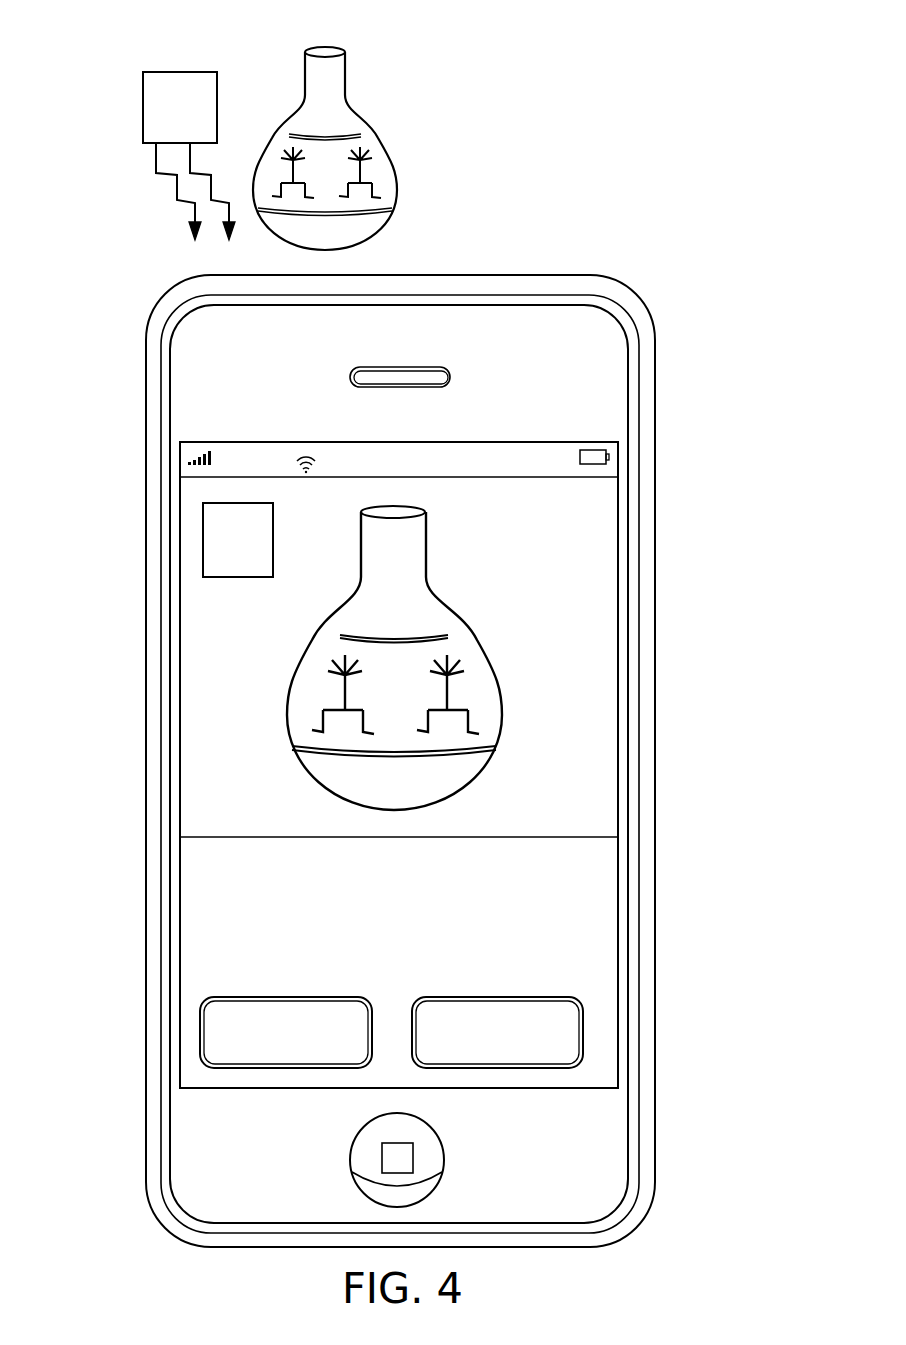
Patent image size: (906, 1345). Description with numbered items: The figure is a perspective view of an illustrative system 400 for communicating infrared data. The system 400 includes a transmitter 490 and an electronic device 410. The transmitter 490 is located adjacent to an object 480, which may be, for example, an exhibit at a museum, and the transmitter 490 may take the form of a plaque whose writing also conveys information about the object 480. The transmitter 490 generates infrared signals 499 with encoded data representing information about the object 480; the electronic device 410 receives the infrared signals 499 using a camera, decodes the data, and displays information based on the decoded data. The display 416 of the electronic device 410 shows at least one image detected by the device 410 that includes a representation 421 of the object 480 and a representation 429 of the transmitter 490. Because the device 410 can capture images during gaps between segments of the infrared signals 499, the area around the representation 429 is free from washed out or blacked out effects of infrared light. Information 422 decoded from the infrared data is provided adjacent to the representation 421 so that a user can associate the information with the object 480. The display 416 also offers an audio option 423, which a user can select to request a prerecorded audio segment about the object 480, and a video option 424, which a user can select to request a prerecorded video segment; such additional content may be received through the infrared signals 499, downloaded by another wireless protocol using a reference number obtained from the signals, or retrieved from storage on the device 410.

The system 400 is at (521, 193).
The electronic device 410 is at (657, 336).
The display 416 is at (620, 518).
The representation of object 421 is at (428, 566).
The information 422 is at (588, 935).
The audio option 423 is at (200, 1038).
The video option 424 is at (583, 1024).
The representation of transmitter 429 is at (236, 580).
The object 480 is at (358, 128).
The transmitter 490 is at (143, 118).
The infrared signals 499 is at (149, 150).